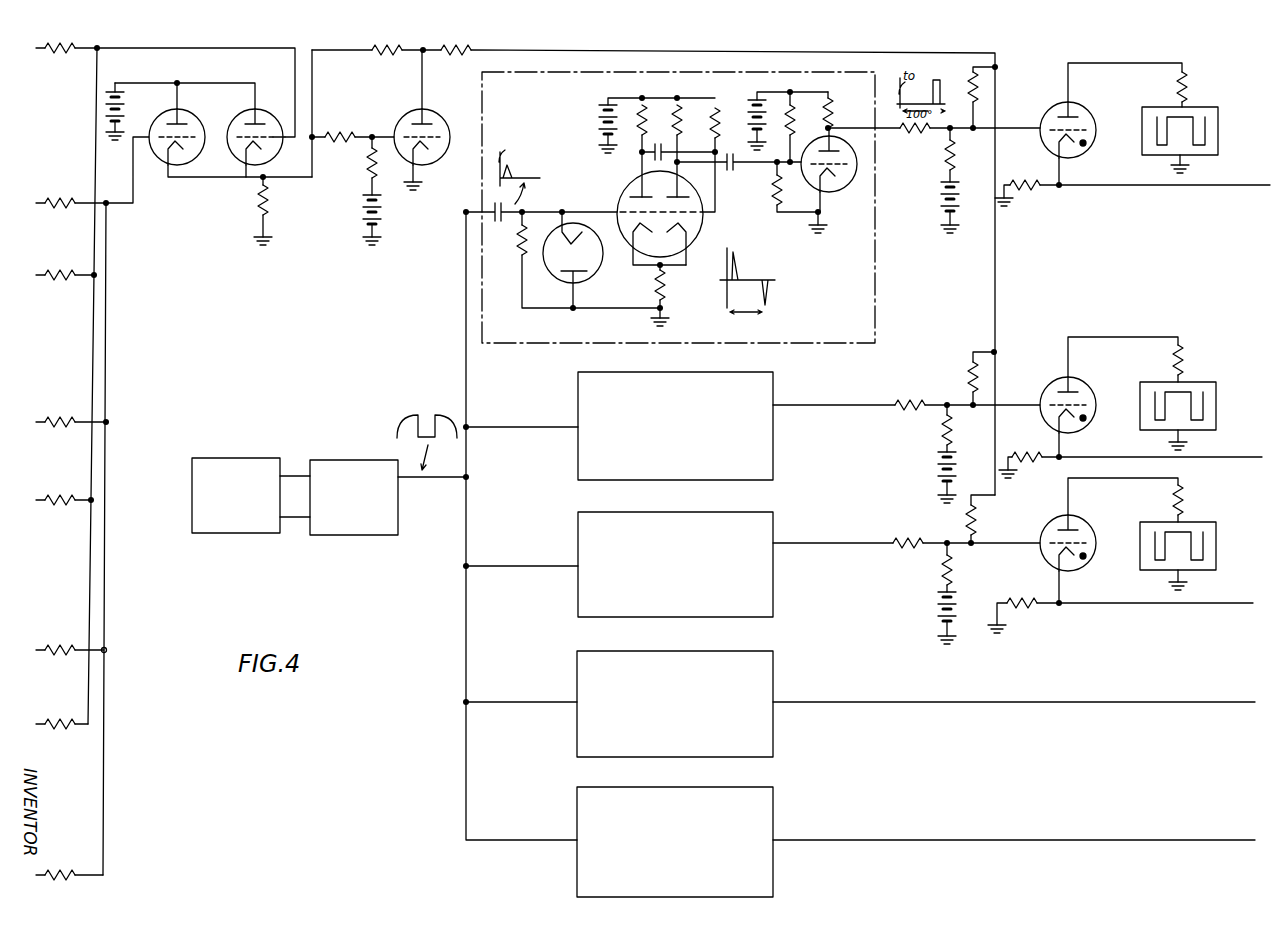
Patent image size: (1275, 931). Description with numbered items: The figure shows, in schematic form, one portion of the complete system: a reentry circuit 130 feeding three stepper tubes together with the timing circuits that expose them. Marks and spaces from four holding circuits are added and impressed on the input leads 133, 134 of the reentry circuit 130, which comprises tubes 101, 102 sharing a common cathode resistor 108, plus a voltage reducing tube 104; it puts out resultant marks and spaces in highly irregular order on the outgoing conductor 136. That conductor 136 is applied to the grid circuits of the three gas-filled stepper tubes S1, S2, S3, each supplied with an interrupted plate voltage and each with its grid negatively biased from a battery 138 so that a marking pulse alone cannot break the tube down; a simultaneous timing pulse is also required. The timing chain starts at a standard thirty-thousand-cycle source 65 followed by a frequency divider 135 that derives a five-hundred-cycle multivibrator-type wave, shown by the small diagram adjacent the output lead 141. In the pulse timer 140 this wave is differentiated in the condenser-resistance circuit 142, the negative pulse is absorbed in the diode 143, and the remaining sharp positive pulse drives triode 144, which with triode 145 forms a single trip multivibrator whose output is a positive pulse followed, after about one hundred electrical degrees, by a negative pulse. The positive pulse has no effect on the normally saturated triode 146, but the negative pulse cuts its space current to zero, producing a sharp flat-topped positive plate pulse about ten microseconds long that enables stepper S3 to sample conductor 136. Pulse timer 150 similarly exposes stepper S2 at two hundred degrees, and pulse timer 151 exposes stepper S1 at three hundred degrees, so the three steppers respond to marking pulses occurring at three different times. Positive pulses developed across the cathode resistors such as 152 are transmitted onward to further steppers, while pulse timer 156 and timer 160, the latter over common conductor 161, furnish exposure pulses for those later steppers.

The 30,000-cycle source 65 is at (249, 460).
The tube 101 is at (201, 119).
The tube 102 is at (263, 108).
The voltage reducing tube 104 is at (401, 113).
The common cathode resistor 108 is at (257, 197).
The reentry circuit 130 is at (347, 188).
The input lead 133 is at (92, 318).
The input lead 134 is at (108, 318).
The frequency divider circuit 135 is at (367, 462).
The outgoing conductor 136 is at (652, 52).
The battery 138 is at (940, 188).
The pulse timer 140 is at (875, 296).
The output lead 141 is at (438, 486).
The condenser-resistance circuit 142 is at (502, 223).
The diode 143 is at (595, 275).
The triode 144 is at (626, 186).
The triode 145 is at (692, 221).
The triode 146 is at (850, 184).
The pulse timer circuit 150 is at (578, 390).
The pulse timer 151 is at (578, 532).
The cathode resistor 152 is at (1032, 193).
The pulse timer 156 is at (577, 797).
The timer 160 is at (577, 664).
The common conductor 161 is at (1212, 702).
The stepper tube S1 is at (1102, 540).
The stepper tube S2 is at (1102, 397).
The stepper tube S3 is at (1104, 124).